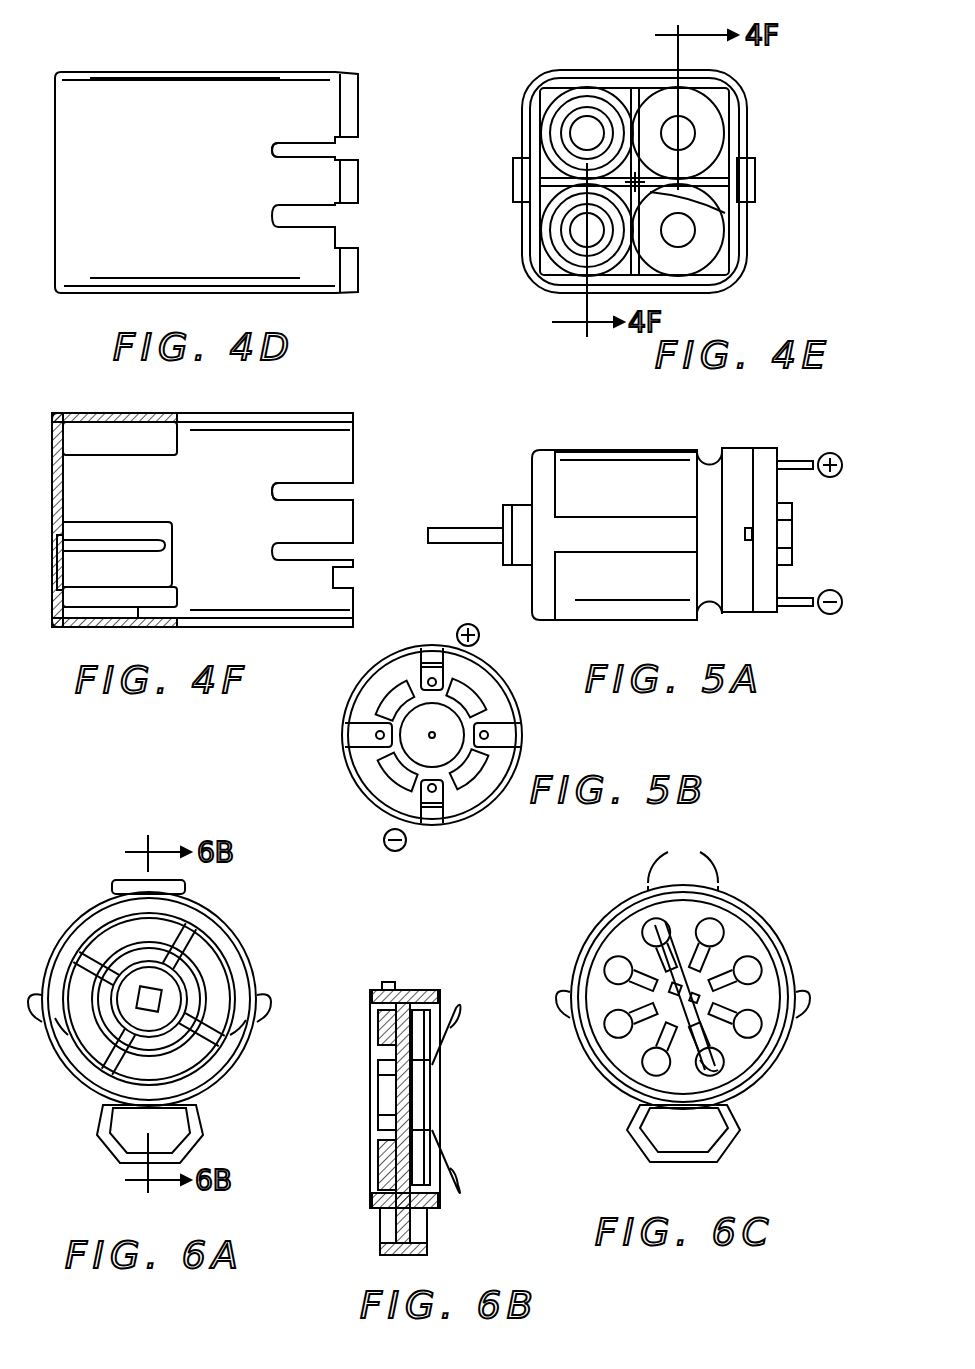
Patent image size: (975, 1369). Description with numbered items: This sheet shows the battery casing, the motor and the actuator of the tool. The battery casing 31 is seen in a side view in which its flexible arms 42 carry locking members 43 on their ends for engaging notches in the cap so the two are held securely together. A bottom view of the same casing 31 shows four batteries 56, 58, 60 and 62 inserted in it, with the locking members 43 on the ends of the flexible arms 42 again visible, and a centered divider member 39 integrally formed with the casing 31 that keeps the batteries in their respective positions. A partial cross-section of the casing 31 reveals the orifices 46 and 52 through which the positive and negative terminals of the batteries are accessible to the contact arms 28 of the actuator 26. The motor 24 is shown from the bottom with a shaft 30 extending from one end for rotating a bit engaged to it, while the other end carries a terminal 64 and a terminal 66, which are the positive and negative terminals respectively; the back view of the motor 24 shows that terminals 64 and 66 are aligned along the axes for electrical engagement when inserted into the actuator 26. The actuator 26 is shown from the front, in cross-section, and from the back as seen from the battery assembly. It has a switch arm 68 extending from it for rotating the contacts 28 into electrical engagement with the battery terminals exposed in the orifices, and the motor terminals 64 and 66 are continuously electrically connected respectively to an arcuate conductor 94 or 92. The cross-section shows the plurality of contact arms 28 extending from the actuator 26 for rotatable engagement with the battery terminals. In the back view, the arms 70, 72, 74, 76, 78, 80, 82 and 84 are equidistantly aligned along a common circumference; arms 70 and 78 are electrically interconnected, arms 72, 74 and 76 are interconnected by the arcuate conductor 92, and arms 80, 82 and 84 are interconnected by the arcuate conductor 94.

In FIG. 5A, the motor 24 is at (583, 438).
In FIG. 5B, the motor 24 is at (325, 745).
In FIG. 6A, the actuator 26 is at (250, 923).
In FIG. 6B, the actuator 26 is at (412, 978).
In FIG. 6C, the actuator 26 is at (762, 895).
In FIG. 6B, the contact arms 28 is at (455, 1173).
In FIG. 6C, the contact arms 28 is at (800, 1098).
In FIG. 5A, the shaft 30 is at (489, 528).
In FIG. 4D, the battery casing 31 is at (96, 55).
In FIG. 4E, the battery casing 31 is at (588, 52).
In FIG. 4F, the battery casing 31 is at (320, 395).
In FIG. 4E, the centered divider member 39 is at (712, 215).
In FIG. 4F, the centered divider member 39 is at (160, 540).
In FIG. 4D, the flexible arms 42 is at (300, 175).
In FIG. 4F, the flexible arms 42 is at (335, 513).
In FIG. 4D, the locking members 43 is at (352, 186).
In FIG. 4E, the locking members 43 is at (743, 178).
In FIG. 4F, the orifice 46 is at (53, 575).
In FIG. 4F, the orifice 52 is at (50, 458).
In FIG. 4E, the battery 56 is at (565, 250).
In FIG. 4E, the battery 58 is at (707, 246).
In FIG. 4E, the battery 60 is at (560, 125).
In FIG. 4E, the battery 62 is at (707, 118).
In FIG. 5A, the terminal 64 is at (788, 462).
In FIG. 5B, the terminal 64 is at (432, 655).
In FIG. 5A, the terminal 66 is at (793, 610).
In FIG. 5B, the terminal 66 is at (432, 825).
In FIG. 6A, the switch arm 68 is at (200, 1125).
In FIG. 6C, the switch arm 68 is at (647, 1152).
In FIG. 6C, the arm 70 is at (645, 926).
In FIG. 6C, the arm 72 is at (720, 926).
In FIG. 6C, the arm 74 is at (760, 975).
In FIG. 6C, the arm 76 is at (755, 1032).
In FIG. 6C, the arm 78 is at (718, 1072).
In FIG. 6C, the arm 80 is at (633, 1080).
In FIG. 6C, the arm 82 is at (617, 1040).
In FIG. 6C, the arm 84 is at (600, 978).
In FIG. 6A, the arcuate conductor 92 is at (82, 1040).
In FIG. 6A, the arcuate conductor 94 is at (247, 1057).